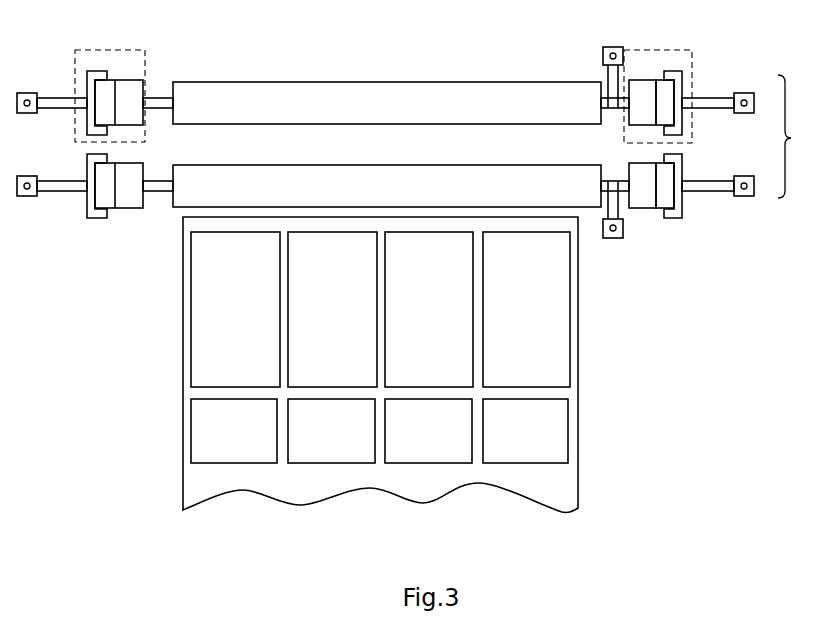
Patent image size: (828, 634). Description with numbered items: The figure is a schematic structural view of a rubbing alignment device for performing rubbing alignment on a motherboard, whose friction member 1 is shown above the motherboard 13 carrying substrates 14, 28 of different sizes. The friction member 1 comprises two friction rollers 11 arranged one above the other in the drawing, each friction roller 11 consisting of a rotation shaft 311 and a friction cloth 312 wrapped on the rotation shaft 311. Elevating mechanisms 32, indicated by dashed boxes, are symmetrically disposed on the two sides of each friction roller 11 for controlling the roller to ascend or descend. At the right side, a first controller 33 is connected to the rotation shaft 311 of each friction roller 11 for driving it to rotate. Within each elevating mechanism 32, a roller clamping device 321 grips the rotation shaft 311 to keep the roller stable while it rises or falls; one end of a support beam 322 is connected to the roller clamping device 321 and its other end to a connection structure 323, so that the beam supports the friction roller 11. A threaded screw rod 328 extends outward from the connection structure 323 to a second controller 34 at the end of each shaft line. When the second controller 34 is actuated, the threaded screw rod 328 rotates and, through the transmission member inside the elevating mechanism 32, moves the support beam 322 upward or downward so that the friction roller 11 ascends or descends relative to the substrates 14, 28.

The friction member 1 is at (793, 136).
The friction roller 11 is at (268, 61).
The substrate / display panel 13 is at (195, 485).
The substrate 14 is at (203, 432).
The substrate 28 is at (203, 308).
The rotation shaft 311 is at (160, 102).
The friction cloth 312 is at (456, 92).
The elevating mechanism 32 is at (76, 137).
The roller clamping device 321 is at (642, 78).
The support beam 322 is at (664, 87).
The connection structure 323 is at (680, 85).
The threaded screw rod 328 is at (59, 100).
The first controller 33 is at (602, 47).
The second controller 34 is at (32, 93).